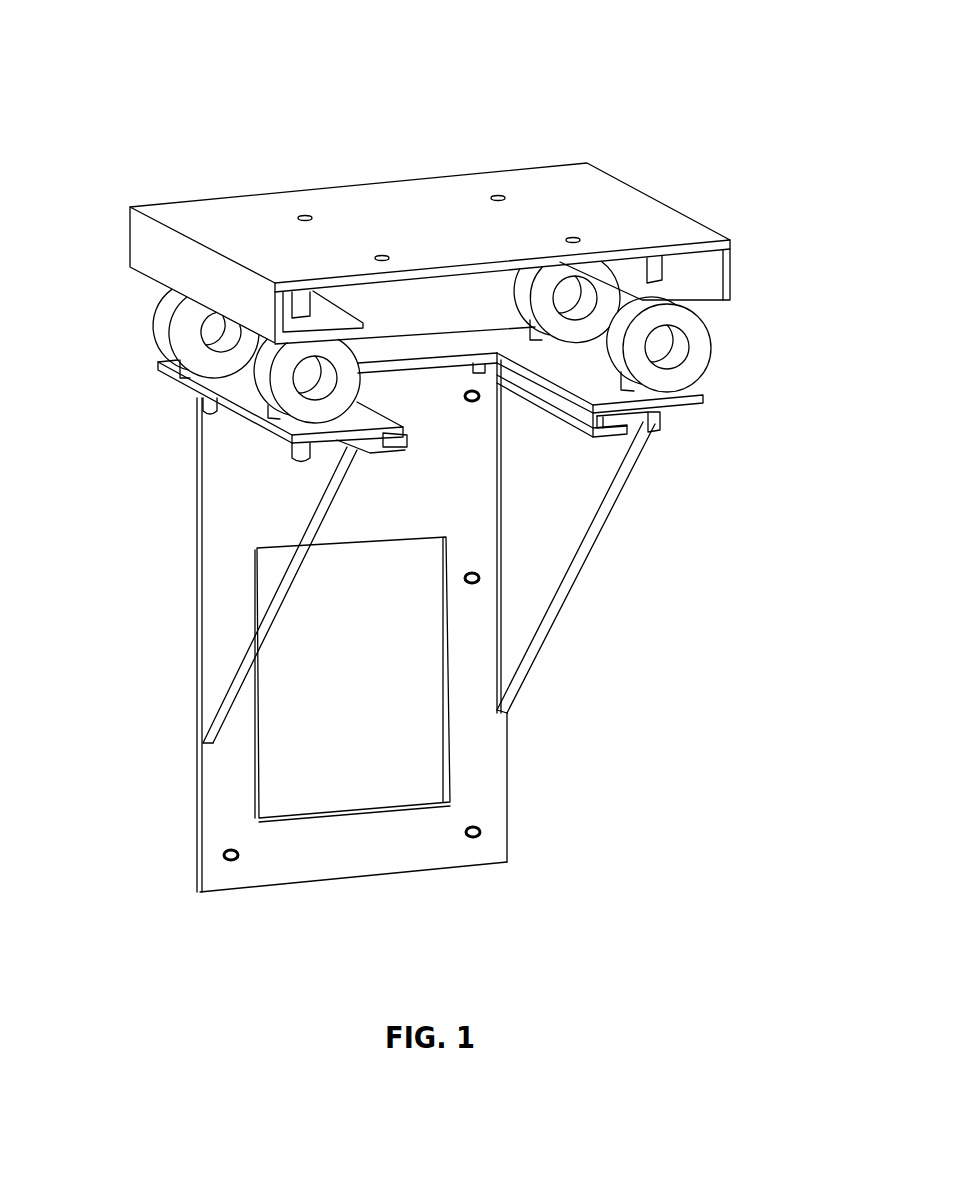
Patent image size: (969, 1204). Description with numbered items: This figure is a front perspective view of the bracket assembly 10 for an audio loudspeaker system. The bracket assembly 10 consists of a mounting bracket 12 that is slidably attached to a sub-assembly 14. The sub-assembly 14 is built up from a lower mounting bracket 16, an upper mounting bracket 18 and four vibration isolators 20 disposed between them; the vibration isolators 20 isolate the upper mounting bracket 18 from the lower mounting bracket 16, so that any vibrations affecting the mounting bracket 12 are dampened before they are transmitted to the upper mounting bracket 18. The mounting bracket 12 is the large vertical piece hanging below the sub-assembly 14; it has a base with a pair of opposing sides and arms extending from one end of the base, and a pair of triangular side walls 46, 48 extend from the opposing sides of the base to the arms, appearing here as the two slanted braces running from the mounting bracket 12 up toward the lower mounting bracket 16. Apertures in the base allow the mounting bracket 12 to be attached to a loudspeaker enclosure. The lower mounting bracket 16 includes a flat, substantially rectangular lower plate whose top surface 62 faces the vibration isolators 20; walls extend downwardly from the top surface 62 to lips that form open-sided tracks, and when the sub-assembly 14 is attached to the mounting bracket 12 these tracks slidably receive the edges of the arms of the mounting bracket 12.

The bracket assembly 10 is at (223, 110).
The mounting bracket 12 is at (222, 790).
The sub-assembly 14 is at (443, 291).
The lower mounting bracket 16 is at (235, 393).
The upper mounting bracket 18 is at (577, 180).
The vibration isolators 20 is at (165, 313).
The side wall 46 is at (235, 550).
The side wall 48 is at (560, 518).
The top surface 62 is at (513, 347).